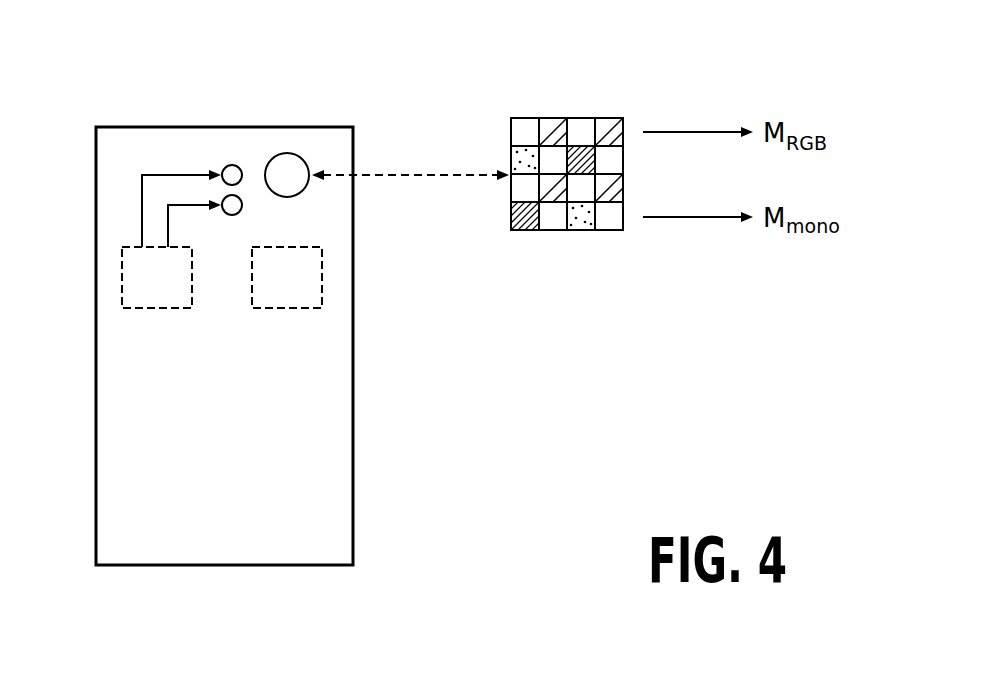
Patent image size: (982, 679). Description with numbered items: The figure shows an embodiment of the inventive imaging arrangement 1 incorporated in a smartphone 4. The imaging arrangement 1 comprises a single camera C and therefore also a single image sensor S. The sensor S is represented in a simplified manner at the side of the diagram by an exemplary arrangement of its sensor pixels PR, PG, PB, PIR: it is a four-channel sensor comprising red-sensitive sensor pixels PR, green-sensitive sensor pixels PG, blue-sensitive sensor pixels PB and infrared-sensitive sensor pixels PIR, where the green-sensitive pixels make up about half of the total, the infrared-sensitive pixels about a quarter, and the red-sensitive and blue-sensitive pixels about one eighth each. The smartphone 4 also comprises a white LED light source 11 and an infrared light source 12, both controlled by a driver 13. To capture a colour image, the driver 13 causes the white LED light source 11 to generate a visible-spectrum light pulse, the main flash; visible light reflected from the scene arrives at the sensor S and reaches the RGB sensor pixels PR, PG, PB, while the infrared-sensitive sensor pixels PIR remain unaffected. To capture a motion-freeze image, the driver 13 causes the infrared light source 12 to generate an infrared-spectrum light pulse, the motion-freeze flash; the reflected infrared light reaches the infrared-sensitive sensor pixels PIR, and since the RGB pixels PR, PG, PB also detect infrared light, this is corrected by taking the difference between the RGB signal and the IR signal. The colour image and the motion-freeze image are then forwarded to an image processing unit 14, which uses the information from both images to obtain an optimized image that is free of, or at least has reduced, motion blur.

The imaging arrangement 1 is at (156, 108).
The smartphone 4 is at (96, 400).
The white LED light source 11 is at (231, 165).
The infrared light source 12 is at (242, 200).
The driver 13 is at (122, 277).
The image processing unit 14 is at (322, 283).
The camera C is at (290, 153).
The image sensor S is at (523, 118).
The infrared-sensitive sensor pixels PIR is at (557, 118).
The red-sensitive sensor pixels PR is at (523, 225).
The green-sensitive sensor pixels PG is at (552, 220).
The blue-sensitive sensor pixels PB is at (582, 224).